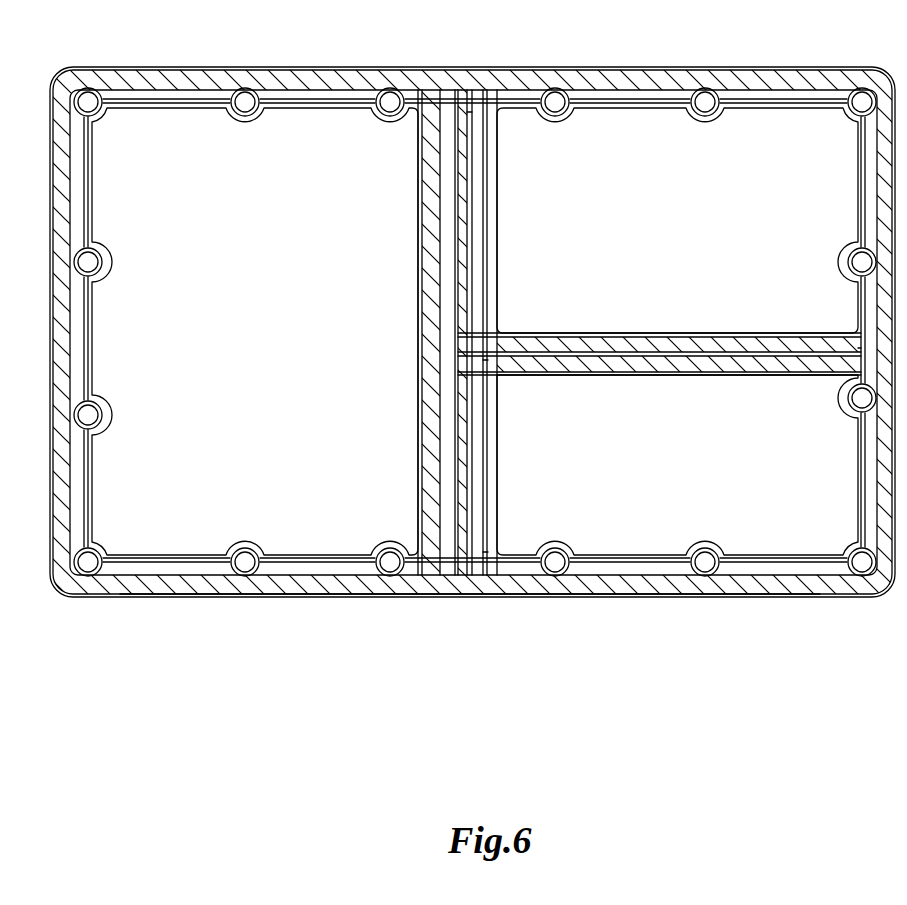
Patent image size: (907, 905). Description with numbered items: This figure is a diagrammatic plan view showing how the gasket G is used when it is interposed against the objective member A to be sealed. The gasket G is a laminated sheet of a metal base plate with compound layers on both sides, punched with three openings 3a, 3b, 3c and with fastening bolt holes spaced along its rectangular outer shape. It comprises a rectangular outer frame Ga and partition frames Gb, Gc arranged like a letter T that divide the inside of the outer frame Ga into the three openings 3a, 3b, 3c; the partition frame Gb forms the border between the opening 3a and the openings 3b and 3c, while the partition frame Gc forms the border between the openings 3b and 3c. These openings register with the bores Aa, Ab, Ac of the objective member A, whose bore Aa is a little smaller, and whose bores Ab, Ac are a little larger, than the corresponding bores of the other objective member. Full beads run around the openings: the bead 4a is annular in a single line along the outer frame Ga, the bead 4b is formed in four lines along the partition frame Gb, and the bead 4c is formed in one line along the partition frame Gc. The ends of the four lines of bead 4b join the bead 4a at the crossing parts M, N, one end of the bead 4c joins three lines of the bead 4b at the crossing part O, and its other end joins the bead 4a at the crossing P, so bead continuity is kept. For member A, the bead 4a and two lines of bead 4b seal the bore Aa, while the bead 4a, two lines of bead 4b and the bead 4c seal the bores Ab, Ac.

The objective member to be sealed A is at (472, 328).
The bore Aa is at (290, 127).
The bore Ab is at (800, 525).
The bore Ac is at (766, 148).
The gasket G is at (728, 72).
The outer frame Ga is at (177, 585).
The partition frame Gb is at (407, 332).
The partition frame Gc is at (659, 352).
The opening 3a is at (162, 130).
The opening 3b is at (631, 538).
The opening 3c is at (612, 135).
The bead 4a is at (76, 318).
The bead 4b is at (458, 428).
The bead 4c is at (731, 356).
The crossing part M is at (470, 117).
The crossing part N is at (486, 548).
The crossing part O is at (486, 362).
The crossing P is at (860, 346).